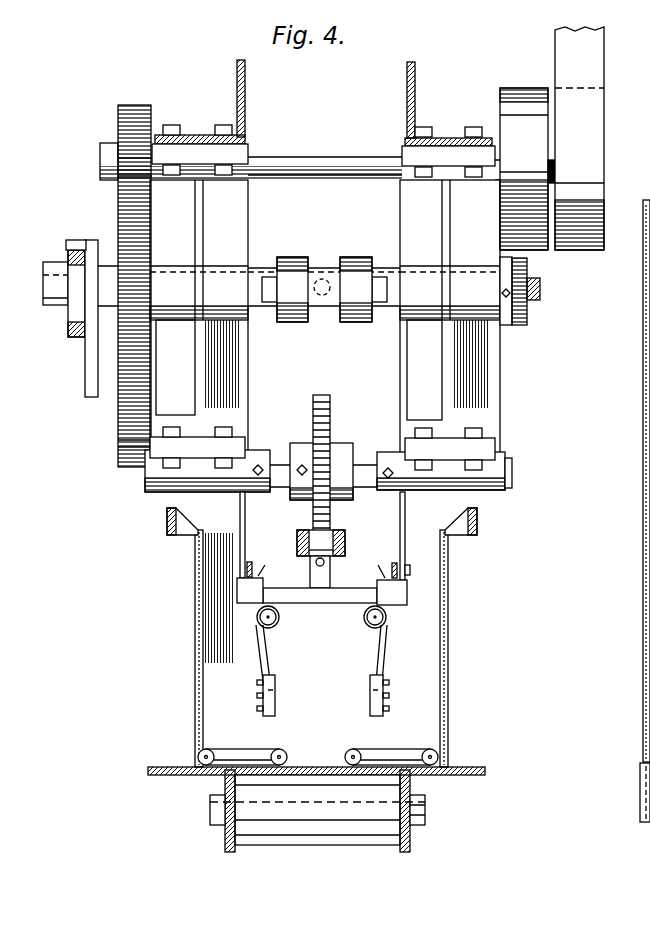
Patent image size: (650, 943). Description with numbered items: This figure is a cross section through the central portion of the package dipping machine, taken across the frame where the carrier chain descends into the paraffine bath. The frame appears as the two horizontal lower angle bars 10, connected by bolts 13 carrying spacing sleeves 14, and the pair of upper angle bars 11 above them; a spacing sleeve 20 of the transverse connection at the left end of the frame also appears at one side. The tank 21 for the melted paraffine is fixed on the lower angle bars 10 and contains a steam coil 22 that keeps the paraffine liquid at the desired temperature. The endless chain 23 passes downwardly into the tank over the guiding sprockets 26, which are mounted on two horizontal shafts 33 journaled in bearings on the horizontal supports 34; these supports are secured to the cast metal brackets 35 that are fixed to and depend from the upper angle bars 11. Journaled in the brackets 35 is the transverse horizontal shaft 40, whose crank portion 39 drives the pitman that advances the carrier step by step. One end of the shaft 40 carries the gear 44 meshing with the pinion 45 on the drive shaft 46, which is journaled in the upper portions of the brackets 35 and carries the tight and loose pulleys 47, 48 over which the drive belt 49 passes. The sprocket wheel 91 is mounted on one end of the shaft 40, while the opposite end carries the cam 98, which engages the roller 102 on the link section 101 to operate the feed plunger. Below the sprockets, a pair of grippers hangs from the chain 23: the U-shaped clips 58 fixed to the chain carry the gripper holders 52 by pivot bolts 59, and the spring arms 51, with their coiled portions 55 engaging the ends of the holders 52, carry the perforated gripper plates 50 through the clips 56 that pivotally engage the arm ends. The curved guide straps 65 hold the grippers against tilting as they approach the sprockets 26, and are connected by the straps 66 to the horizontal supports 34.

The lower angle bars 10 is at (195, 771).
The upper angle bars 11 is at (406, 85).
The bolts 13 is at (302, 838).
The spacing sleeves 14 is at (355, 838).
The spacing sleeves 20 is at (645, 634).
The tank 21 is at (448, 623).
The steam coil 22 is at (357, 747).
The endless chain 23 is at (340, 545).
The guiding sprockets 26 is at (332, 412).
The horizontal shafts 33 is at (360, 463).
The horizontal supports 34 is at (230, 445).
The brackets 35 is at (223, 375).
The crank portion 39 is at (320, 280).
The transverse horizontal shaft 40 is at (392, 300).
The gear 44 is at (118, 447).
The pinion 45 is at (118, 130).
The drive shaft 46 is at (318, 165).
The tight pulley 47 is at (594, 57).
The loose pulley 48 is at (518, 88).
The drive belt 49 is at (590, 88).
The gripper plates 50 is at (373, 687).
The spring arms 51 is at (382, 650).
The gripper holders 52 is at (395, 595).
The coiled portions 55 is at (362, 612).
The clips 56 is at (262, 692).
The U-shaped clips 58 is at (342, 548).
The pivot bolts 59 is at (330, 560).
The guide straps 65 is at (253, 567).
The straps 66 is at (245, 515).
The sprocket wheel 91 is at (530, 273).
The cam 98 is at (74, 336).
The link section 101 is at (88, 368).
The roller 102 is at (78, 242).